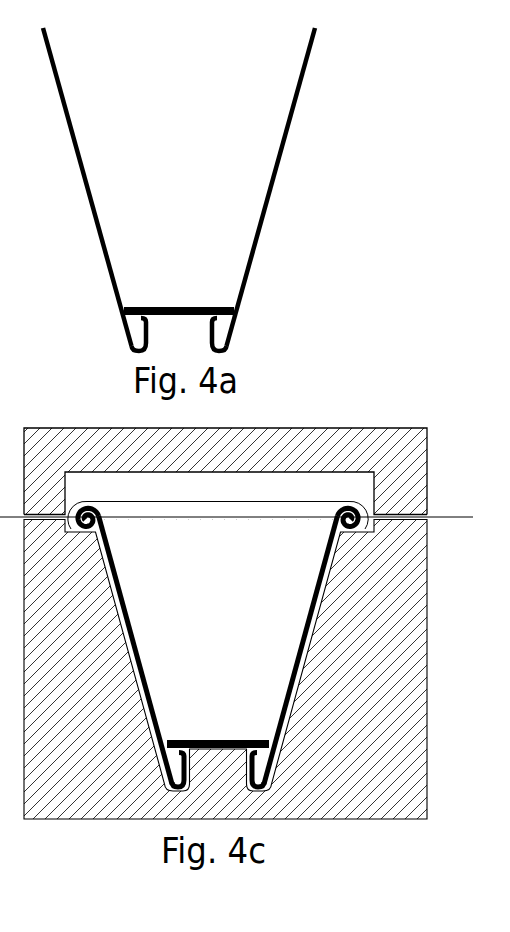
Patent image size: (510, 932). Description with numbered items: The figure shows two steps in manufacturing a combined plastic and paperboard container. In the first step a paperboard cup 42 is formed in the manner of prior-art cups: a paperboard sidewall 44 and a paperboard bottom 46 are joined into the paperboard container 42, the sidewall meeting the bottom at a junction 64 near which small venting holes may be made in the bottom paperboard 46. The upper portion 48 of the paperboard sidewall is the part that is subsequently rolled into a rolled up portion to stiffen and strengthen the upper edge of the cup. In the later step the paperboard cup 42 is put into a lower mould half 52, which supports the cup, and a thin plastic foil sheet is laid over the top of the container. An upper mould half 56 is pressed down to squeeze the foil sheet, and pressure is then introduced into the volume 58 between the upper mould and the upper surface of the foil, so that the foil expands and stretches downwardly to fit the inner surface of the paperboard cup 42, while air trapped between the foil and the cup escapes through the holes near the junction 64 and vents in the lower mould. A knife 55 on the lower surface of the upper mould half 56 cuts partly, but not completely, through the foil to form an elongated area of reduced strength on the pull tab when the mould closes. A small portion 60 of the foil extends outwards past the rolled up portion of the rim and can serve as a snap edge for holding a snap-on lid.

In FIG. 4A, the paperboard cup 42 is at (258, 186).
In FIG. 4A, the paperboard sidewall 44 is at (286, 148).
In FIG. 4A, the paperboard bottom 46 is at (180, 299).
In FIG. 4A, the upper portion of the paperboard sidewall 48 is at (50, 31).
In FIG. 4C, the lower mould half 52 is at (390, 670).
In FIG. 4C, the knife 55 is at (374, 515).
In FIG. 4C, the upper mould half 56 is at (225, 417).
In FIG. 4C, the volume 58 is at (267, 482).
In FIG. 4C, the small portion of the thin plastic foil sheet 60 is at (509, 459).
In FIG. 4C, the junction 64 is at (262, 735).